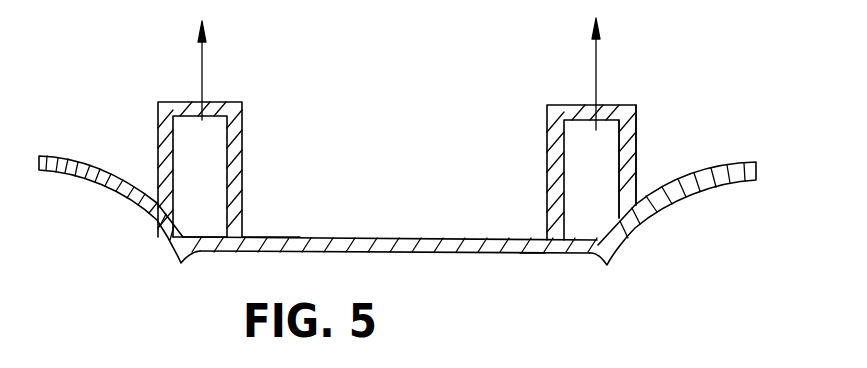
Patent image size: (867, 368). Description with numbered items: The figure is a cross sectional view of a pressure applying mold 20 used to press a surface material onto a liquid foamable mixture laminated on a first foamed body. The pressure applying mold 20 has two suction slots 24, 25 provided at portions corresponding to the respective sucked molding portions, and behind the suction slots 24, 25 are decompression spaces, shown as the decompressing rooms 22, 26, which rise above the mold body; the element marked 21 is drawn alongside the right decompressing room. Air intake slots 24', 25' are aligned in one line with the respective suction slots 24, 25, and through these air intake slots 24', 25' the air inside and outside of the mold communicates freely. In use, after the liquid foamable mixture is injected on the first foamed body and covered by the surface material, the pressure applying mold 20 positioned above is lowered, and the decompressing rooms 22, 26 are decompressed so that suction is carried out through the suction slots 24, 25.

The pressure applying mold 20 is at (380, 238).
The right cup-shaped projection 21 is at (623, 110).
The decompressing room 22 is at (237, 136).
The suction slot 24 is at (240, 185).
The air intake slot 24' is at (296, 204).
The suction slot 25 is at (659, 250).
The air intake slot 25' is at (513, 295).
The decompressing room 26 is at (637, 125).